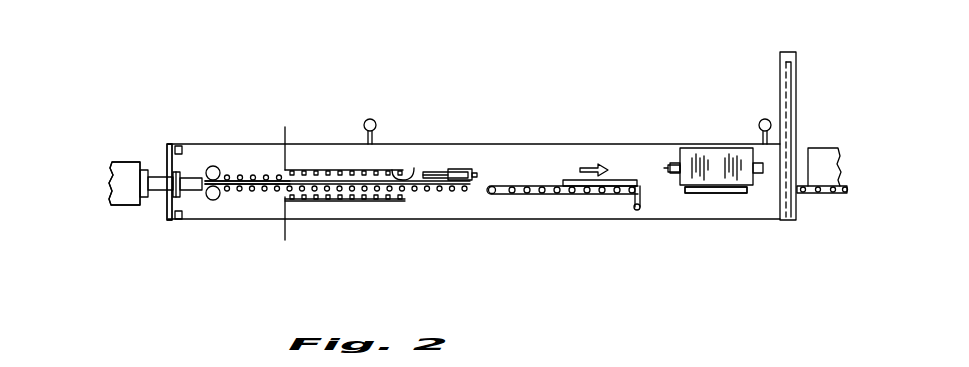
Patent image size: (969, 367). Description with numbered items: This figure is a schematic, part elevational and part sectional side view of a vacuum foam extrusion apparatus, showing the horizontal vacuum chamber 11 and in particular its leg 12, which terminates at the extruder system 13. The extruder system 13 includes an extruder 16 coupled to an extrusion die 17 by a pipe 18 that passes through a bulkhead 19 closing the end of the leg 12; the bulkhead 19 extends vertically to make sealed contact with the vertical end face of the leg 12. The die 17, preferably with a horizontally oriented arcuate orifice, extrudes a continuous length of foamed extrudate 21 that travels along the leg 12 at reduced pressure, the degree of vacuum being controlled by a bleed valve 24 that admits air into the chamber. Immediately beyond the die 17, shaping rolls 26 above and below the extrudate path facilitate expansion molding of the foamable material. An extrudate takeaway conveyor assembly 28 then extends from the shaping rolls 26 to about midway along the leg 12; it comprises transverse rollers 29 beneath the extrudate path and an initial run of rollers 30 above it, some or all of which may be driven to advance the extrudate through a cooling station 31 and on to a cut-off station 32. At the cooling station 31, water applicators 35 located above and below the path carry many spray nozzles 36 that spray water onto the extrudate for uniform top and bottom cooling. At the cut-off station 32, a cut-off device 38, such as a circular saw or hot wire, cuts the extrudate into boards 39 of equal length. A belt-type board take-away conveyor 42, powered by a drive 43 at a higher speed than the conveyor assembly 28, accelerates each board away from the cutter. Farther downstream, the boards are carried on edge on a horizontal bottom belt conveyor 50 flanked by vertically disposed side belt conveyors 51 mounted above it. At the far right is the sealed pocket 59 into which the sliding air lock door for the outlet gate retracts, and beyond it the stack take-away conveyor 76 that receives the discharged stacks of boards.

The vacuum chamber 11 is at (467, 221).
The leg of vacuum chamber 12 is at (502, 144).
The extruder system 13 is at (127, 208).
The extruder 16 is at (119, 160).
The extrusion die 17 is at (195, 197).
The pipe 18 is at (154, 165).
The bulkhead 19 is at (163, 208).
The foamed extrudate 21 is at (262, 191).
The bleed valve 24 is at (370, 118).
The shaping rolls 26 is at (208, 167).
The extrudate takeaway conveyor assembly 28 is at (278, 198).
The rollers 29 is at (415, 189).
The rollers 30 is at (243, 175).
The cooling station 31 is at (303, 152).
The cut-off station 32 is at (448, 163).
The water applicators 35 is at (340, 170).
The spray nozzles 36 is at (414, 168).
The extrudate cut-off device 38 is at (465, 170).
The boards 39 is at (570, 180).
The board take-away conveyor 42 is at (533, 195).
The drive 43 is at (637, 210).
The bottom belt conveyor 50 is at (715, 194).
The side belt conveyors 51 is at (668, 167).
The sealed pocket 59 is at (790, 52).
The stack take-away conveyor 76 is at (832, 196).